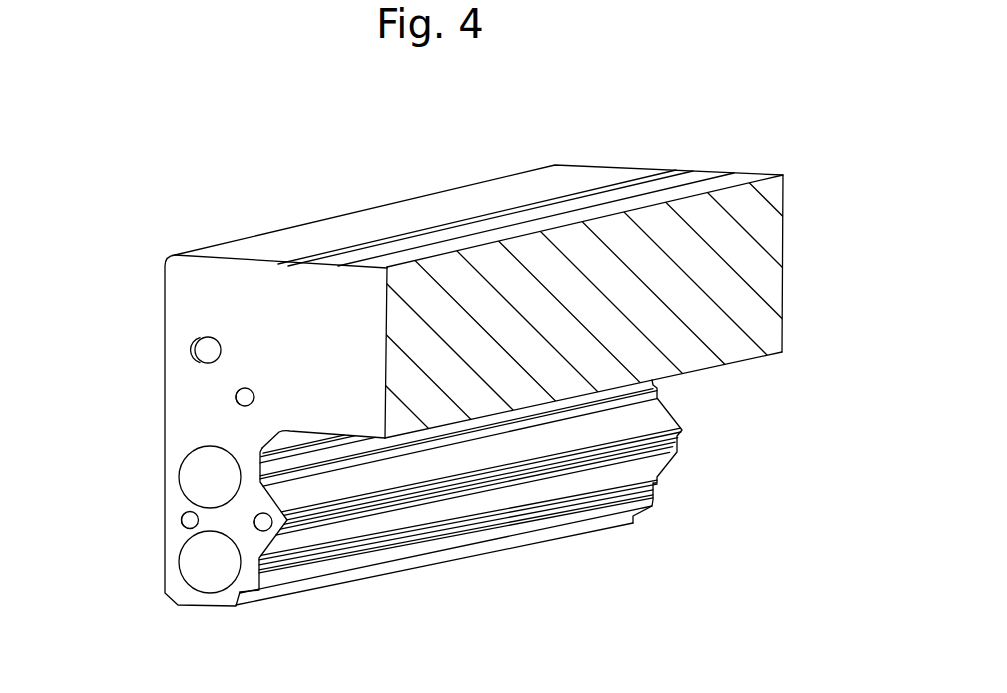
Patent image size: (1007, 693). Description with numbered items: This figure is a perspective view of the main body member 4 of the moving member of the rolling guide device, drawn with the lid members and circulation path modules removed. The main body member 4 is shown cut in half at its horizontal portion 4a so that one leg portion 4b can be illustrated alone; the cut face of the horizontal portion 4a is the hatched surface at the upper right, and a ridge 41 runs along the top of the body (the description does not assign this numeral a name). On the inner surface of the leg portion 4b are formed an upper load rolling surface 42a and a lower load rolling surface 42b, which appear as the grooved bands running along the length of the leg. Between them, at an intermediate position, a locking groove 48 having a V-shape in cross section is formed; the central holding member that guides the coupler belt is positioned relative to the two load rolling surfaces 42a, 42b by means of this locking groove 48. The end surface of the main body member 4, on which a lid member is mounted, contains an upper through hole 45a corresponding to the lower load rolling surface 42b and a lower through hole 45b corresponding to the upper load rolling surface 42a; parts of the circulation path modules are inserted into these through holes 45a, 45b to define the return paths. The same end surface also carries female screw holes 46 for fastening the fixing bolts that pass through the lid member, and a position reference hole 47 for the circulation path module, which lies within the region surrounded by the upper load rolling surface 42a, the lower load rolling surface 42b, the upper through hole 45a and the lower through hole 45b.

The main body member 4 is at (342, 200).
The ridge portion on top of rail 41 is at (467, 206).
The horizontal portion 4a is at (774, 197).
The leg portion 4b is at (320, 590).
The upper load rolling surface 42a is at (511, 456).
The lower load rolling surface 42b is at (431, 513).
The upper through hole 45a is at (190, 478).
The lower through hole 45b is at (192, 570).
The female screw holes 46 is at (236, 397).
The position reference hole 47 is at (257, 531).
The locking groove 48 is at (654, 446).